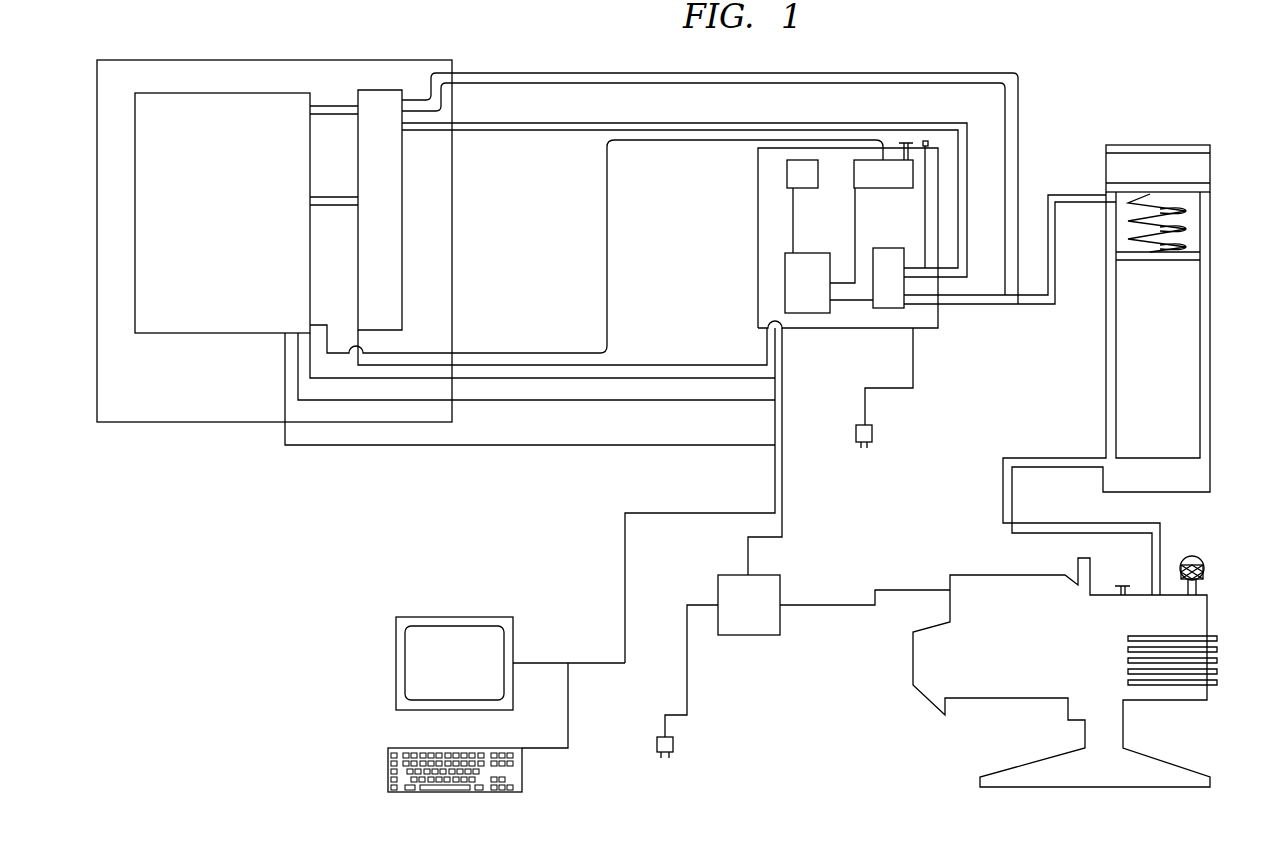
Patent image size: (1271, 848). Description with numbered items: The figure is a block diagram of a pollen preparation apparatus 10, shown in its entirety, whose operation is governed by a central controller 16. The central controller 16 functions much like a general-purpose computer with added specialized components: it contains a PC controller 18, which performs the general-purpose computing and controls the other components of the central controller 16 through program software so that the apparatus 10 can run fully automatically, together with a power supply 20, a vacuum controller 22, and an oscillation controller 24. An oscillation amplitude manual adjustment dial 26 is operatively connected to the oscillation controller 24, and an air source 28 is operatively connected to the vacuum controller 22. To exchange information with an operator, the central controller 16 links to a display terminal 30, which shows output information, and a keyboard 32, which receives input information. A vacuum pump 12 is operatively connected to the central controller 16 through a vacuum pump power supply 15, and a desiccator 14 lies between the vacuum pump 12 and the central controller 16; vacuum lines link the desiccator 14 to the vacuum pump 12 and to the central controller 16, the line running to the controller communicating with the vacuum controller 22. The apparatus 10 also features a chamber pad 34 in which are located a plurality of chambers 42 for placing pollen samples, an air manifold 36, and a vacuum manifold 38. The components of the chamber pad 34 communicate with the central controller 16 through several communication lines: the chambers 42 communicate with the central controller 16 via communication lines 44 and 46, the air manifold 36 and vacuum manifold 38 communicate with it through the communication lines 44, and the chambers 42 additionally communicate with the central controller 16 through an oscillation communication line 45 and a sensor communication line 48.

The pollen preparation apparatus 10 is at (307, 553).
The vacuum pump 12 is at (1207, 608).
The desiccator 14 is at (1208, 298).
The vacuum pump power supply 15 is at (780, 575).
The central controller 16 is at (758, 208).
The PC controller 18 is at (812, 251).
The power supply 20 is at (812, 190).
The vacuum controller 22 is at (878, 312).
The oscillation controller 24 is at (888, 190).
The oscillation amplitude manual adjustment dial 26 is at (904, 140).
The air source 28 is at (928, 143).
The display terminal 30 is at (396, 663).
The keyboard 32 is at (388, 768).
The chamber pad 34 is at (288, 60).
The air manifold 36 is at (405, 170).
The vacuum manifold 38 is at (405, 250).
The chambers 42 is at (158, 334).
The communication lines 44 is at (640, 363).
The oscillation communication line 45 is at (607, 237).
The communication line 46 is at (505, 447).
The sensor communication line 48 is at (547, 401).